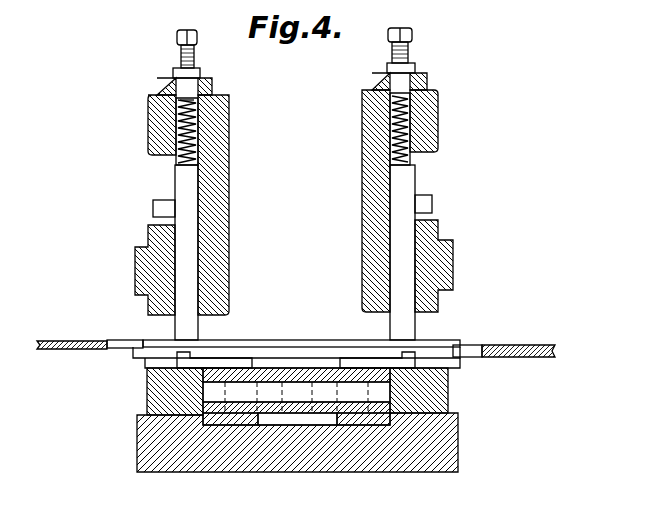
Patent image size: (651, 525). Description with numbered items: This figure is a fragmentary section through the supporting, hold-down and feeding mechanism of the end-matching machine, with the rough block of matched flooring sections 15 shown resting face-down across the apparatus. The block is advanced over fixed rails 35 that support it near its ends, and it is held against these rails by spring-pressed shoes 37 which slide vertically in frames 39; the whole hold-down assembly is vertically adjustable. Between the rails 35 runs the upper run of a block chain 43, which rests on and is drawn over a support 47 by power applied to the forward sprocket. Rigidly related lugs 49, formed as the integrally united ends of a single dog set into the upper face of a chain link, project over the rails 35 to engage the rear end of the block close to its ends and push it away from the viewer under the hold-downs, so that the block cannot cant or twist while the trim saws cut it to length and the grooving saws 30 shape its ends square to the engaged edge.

The short sections of matched flooring 15 is at (300, 347).
The grooving saws 30 is at (70, 339).
The fixed rails 35 is at (148, 393).
The spring-pressed shoes 37 is at (188, 263).
The frames 39 is at (229, 157).
The block chain 43 is at (273, 414).
The support 47 is at (322, 460).
The lugs 49 is at (200, 362).